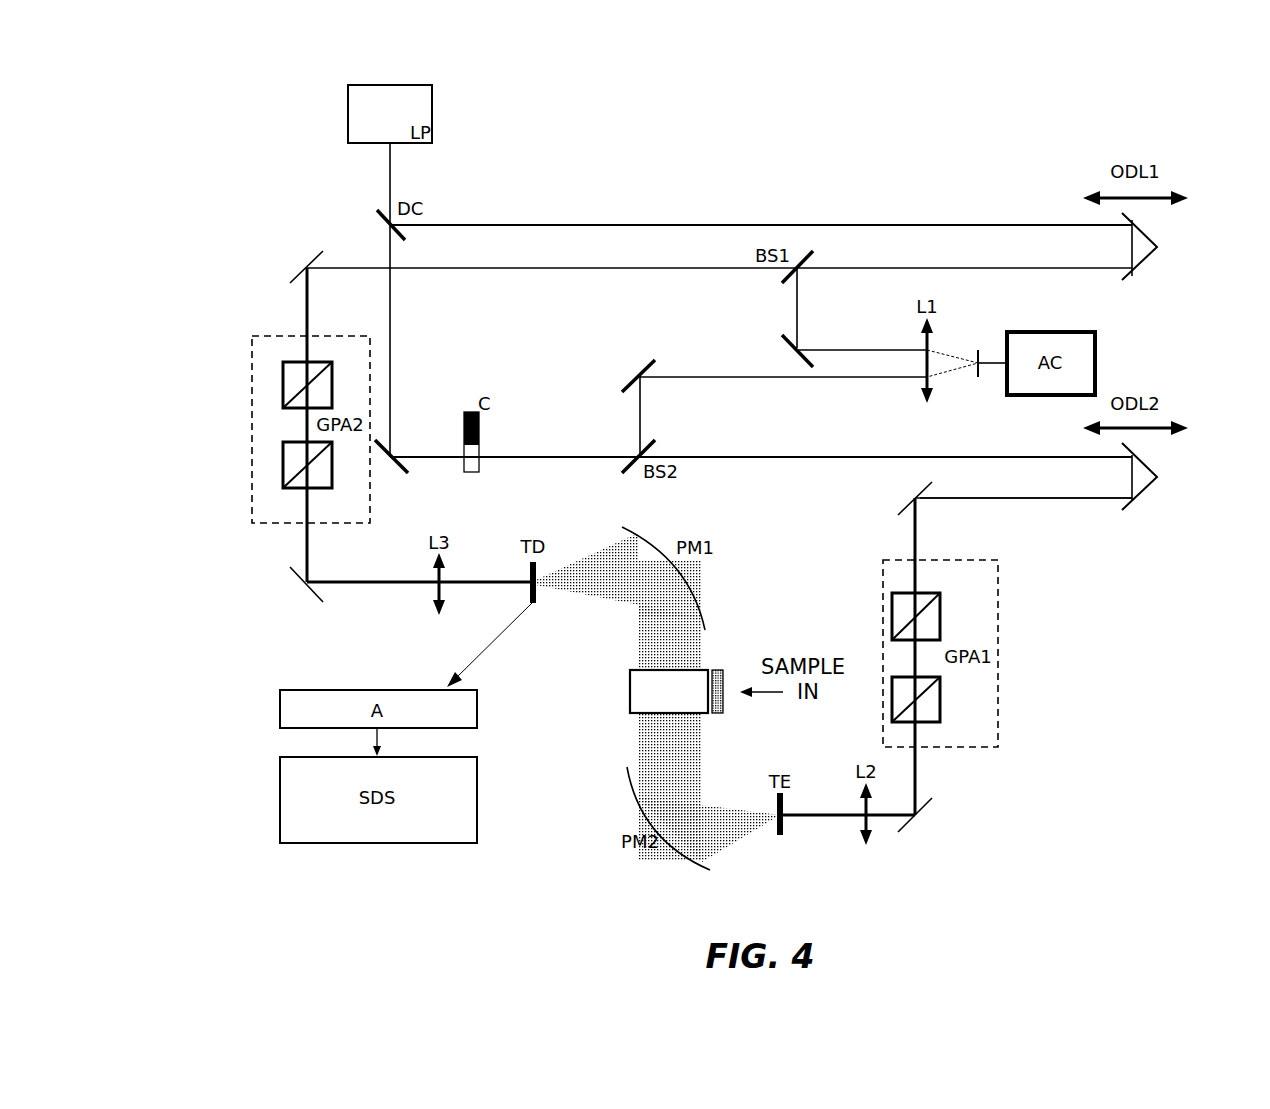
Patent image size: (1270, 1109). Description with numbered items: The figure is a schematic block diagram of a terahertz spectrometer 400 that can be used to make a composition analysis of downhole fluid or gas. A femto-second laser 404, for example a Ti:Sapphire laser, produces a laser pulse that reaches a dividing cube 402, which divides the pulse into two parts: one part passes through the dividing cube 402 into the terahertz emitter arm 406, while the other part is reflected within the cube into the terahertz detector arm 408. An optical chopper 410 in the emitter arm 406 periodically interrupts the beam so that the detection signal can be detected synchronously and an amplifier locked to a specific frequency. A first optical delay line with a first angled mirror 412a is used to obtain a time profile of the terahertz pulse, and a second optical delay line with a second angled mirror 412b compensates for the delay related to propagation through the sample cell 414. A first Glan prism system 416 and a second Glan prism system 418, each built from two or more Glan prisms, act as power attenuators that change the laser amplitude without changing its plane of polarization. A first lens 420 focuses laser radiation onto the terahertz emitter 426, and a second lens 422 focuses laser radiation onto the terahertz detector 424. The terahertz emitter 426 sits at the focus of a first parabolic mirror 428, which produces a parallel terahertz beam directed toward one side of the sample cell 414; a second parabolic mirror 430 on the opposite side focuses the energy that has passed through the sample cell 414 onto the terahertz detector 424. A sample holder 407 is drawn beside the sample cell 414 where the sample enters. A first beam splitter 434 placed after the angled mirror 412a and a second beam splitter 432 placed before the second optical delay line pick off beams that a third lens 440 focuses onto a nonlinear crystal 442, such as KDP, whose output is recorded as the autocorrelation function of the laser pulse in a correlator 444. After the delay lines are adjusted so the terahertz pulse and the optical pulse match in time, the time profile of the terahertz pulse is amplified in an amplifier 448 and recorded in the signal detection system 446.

The terahertz spectrometer 400 is at (1160, 852).
The dividing cube 402 is at (380, 215).
The femto-second laser 404 is at (428, 143).
The terahertz emitter arm 406 is at (1017, 500).
The sample holder / sample inlet 407 is at (722, 670).
The terahertz detector arm 408 is at (915, 222).
The optical chopper 410 is at (470, 472).
The first angled mirror 412a is at (1143, 262).
The second angled mirror 412b is at (1140, 495).
The sample cell 414 is at (630, 688).
The first Glan prism system 416 is at (244, 392).
The second Glan prism system 418 is at (1017, 627).
The first lens 420 is at (868, 843).
The second lens 422 is at (440, 612).
The terahertz detector 424 is at (535, 603).
The terahertz emitter 426 is at (782, 838).
The first parabolic mirror 428 is at (688, 855).
The second parabolic mirror 430 is at (655, 540).
The second beam splitter 432 is at (653, 445).
The first beam splitter 434 is at (792, 277).
The third lens 440 is at (925, 402).
The nonlinear crystal 442 is at (978, 380).
The correlator 444 is at (1032, 332).
The signal detection system 446 is at (280, 815).
The amplifier 448 is at (280, 703).